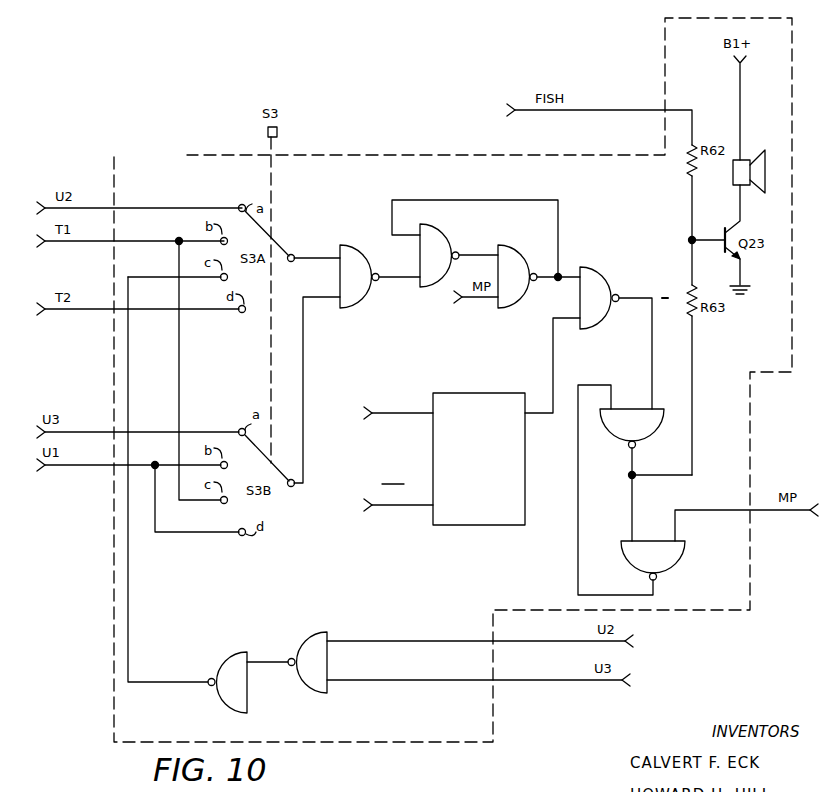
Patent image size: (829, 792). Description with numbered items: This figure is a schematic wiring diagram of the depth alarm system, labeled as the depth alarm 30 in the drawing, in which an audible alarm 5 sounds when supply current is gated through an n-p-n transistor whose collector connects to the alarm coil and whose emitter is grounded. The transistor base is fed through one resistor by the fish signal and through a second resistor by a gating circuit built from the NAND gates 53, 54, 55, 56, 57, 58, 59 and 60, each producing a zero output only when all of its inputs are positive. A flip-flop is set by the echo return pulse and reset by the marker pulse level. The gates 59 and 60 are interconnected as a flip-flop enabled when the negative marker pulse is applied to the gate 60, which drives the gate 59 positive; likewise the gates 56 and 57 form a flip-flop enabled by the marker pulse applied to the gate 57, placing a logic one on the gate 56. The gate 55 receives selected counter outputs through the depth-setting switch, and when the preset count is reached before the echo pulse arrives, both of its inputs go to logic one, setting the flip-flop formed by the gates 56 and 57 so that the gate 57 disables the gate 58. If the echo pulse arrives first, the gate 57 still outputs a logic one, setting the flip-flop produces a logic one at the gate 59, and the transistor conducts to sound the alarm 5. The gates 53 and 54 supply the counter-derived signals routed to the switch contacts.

The speaker 5 is at (765, 158).
The depth alarm 30 is at (447, 593).
The NAND gate 53 is at (329, 631).
The NAND gate 54 is at (246, 650).
The NAND gate 55 is at (352, 248).
The NAND gate 56 is at (454, 242).
The NAND gate 57 is at (530, 242).
The NAND gate 58 is at (606, 273).
The NAND gate 59 is at (653, 430).
The NAND gate 60 is at (674, 564).